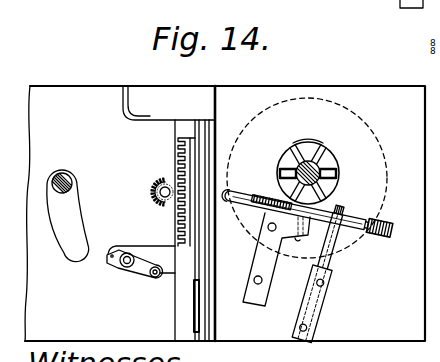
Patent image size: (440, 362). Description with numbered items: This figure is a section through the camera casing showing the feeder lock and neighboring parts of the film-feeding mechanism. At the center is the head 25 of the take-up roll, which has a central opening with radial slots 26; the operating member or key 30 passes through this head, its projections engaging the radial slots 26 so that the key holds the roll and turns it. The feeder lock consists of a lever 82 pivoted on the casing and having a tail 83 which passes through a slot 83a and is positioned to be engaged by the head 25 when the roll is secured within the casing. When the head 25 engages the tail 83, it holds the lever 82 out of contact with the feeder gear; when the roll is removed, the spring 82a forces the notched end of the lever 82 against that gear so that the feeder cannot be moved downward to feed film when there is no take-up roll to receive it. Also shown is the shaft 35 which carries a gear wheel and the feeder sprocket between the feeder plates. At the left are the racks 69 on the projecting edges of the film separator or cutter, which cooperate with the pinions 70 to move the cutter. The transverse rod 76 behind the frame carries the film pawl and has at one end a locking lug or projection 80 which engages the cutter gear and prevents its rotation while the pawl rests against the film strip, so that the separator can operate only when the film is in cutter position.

The head 25 is at (336, 187).
The radial slots 26 is at (318, 145).
The operating member or key 30 is at (322, 167).
The shaft 35 is at (63, 175).
The racks 69 is at (190, 153).
The pinions 70 is at (146, 185).
The transverse rod 76 is at (116, 263).
The locking lug or projection 80 is at (155, 278).
The lever 82 is at (352, 238).
The spring 82a is at (328, 262).
The tail 83 is at (261, 203).
The slot 83a is at (236, 205).